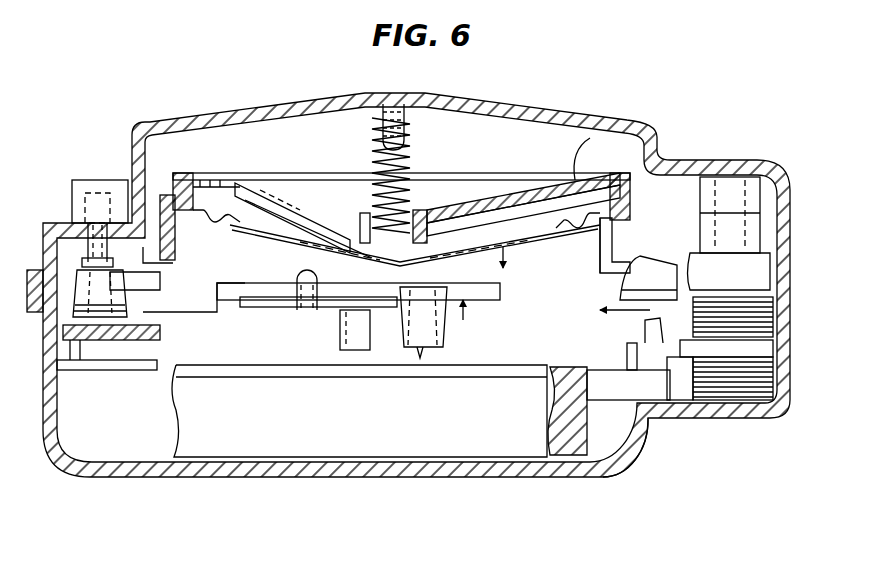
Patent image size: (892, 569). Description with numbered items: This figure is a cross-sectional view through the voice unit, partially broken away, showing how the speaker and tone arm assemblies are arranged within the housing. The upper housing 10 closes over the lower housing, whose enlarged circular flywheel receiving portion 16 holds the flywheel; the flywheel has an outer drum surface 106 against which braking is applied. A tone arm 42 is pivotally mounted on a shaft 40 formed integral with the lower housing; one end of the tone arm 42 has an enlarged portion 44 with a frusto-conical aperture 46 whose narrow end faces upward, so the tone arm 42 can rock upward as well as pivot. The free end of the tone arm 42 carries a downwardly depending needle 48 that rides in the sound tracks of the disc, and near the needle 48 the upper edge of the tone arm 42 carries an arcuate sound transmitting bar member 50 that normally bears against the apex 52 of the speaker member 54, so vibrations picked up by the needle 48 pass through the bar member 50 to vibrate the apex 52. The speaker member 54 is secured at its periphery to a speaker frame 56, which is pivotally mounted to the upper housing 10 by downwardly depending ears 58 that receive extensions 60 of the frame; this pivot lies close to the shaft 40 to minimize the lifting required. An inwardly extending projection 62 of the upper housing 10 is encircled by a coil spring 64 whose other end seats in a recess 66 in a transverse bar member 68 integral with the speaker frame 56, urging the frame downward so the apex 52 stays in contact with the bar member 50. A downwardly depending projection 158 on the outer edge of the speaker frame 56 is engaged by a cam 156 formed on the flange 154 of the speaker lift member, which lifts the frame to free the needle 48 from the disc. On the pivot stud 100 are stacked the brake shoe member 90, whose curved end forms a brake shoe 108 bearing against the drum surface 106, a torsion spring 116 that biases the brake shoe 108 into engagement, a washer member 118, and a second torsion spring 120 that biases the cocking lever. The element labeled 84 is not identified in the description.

The upper housing 10 is at (132, 143).
The flywheel receiving portion 16 is at (632, 467).
The shaft 40 is at (88, 250).
The tone arm 42 is at (247, 333).
The enlarged portion 44 is at (83, 300).
The frusto-conical aperture 46 is at (80, 357).
The needle 48 is at (423, 358).
The sound transmitting bar member 50 is at (405, 258).
The apex 52 is at (337, 270).
The speaker member 54 is at (240, 212).
The speaker frame 56 is at (180, 176).
The ears 58 is at (133, 280).
The extensions 60 is at (157, 262).
The projection 62 is at (410, 120).
The coil spring 64 is at (415, 165).
The recess 66 is at (430, 205).
The bar member 68 is at (597, 120).
The contact block 84 is at (352, 330).
The brake shoe member 90 is at (757, 350).
The pivot stud 100 is at (762, 216).
The drum surface 106 is at (590, 455).
The brake shoe 108 is at (595, 368).
The torsion spring 116 is at (747, 383).
The washer member 118 is at (760, 340).
The second torsion spring 120 is at (753, 290).
The flange 154 is at (633, 272).
The cam 156 is at (630, 272).
The projection 158 is at (617, 240).